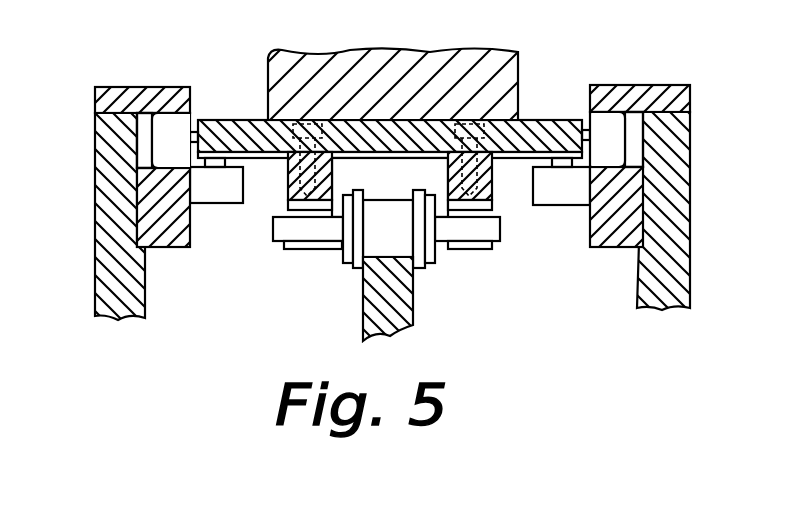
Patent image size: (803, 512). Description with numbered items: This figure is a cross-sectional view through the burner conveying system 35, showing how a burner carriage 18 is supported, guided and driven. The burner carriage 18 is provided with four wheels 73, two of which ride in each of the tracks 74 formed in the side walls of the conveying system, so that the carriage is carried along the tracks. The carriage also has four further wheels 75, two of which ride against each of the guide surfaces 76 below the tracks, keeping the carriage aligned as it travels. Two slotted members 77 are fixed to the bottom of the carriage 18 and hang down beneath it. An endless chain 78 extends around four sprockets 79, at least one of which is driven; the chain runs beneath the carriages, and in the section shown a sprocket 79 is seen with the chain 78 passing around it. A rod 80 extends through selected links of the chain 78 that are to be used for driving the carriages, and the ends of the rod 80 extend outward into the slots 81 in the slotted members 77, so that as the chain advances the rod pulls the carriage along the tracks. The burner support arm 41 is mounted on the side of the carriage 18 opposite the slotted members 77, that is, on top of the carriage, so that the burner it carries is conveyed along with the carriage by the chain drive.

The burner carriage 18 is at (542, 118).
The burner conveying system 35 is at (86, 221).
The burner support arm 41 is at (382, 62).
The wheel 73 is at (177, 130).
The track 74 is at (150, 132).
The wheel 75 is at (219, 192).
The guide surface 76 is at (192, 238).
The slotted member 77 is at (448, 177).
The endless chain 78 is at (442, 257).
The sprocket 79 is at (363, 310).
The rod 80 is at (276, 232).
The slot 81 is at (298, 208).